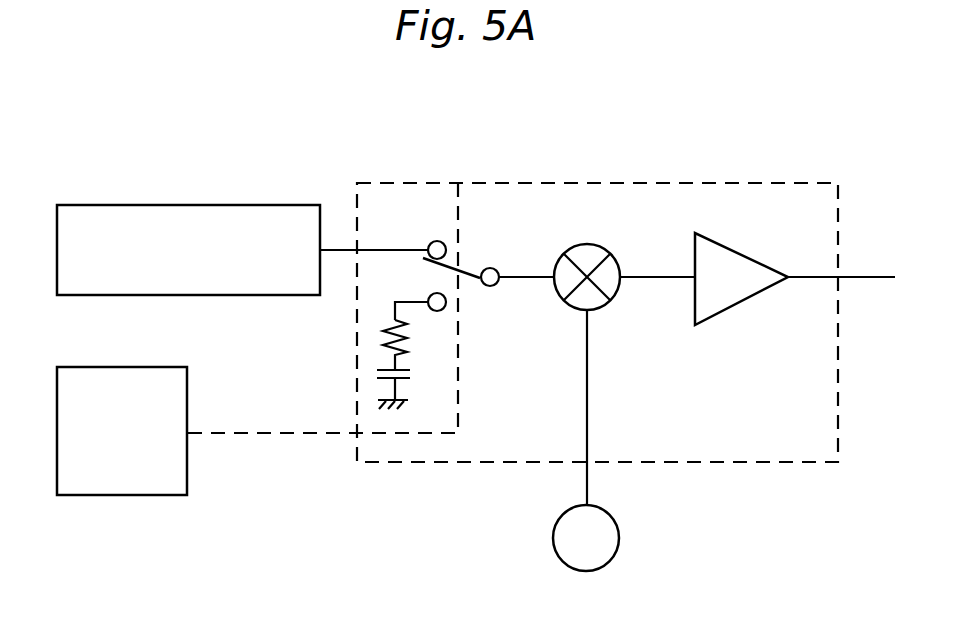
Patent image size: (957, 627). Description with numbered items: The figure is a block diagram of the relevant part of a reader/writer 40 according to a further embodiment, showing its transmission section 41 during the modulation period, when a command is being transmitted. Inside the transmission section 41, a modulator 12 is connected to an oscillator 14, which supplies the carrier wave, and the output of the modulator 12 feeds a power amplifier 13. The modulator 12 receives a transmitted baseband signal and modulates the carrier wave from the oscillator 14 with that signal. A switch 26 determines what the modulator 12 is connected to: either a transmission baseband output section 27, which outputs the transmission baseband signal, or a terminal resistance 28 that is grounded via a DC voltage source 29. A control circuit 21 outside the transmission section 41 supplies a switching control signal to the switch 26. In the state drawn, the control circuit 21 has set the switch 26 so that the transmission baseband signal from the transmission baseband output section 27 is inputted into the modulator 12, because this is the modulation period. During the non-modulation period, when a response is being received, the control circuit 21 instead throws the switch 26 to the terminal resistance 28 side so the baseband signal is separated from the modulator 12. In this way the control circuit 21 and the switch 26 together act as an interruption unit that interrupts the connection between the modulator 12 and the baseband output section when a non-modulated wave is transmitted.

The reader/writer 40 is at (308, 143).
The transmission baseband output section 27 is at (150, 205).
The control circuit 21 is at (118, 495).
The transmission section 41 is at (722, 185).
The switch 26 is at (463, 270).
The terminal resistance 28 is at (380, 332).
The DC voltage source 29 is at (412, 373).
The modulator 12 is at (602, 245).
The power amplifier 13 is at (733, 245).
The oscillator 14 is at (620, 535).